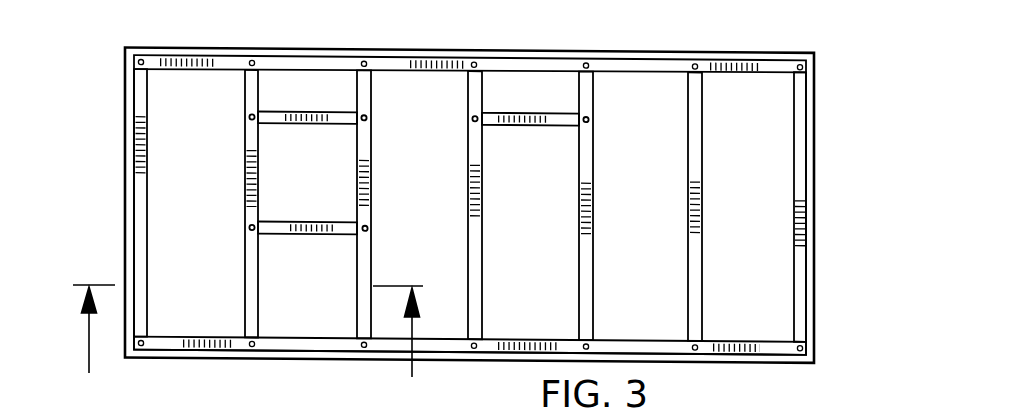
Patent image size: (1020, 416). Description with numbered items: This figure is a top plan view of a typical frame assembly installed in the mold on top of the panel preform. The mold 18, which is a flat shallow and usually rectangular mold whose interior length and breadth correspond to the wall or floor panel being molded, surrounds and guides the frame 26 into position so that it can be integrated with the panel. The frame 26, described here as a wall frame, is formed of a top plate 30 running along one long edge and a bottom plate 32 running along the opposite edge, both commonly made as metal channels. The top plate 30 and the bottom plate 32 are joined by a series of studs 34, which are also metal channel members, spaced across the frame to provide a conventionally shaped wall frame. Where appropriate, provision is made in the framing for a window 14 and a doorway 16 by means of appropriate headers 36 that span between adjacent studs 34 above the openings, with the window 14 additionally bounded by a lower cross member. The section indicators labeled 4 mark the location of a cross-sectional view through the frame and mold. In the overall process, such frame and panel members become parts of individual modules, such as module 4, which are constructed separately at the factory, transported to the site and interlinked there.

The module 4 is at (248, 347).
The window 14 is at (321, 201).
The doorway 16 is at (538, 229).
The mold 18 is at (817, 177).
The frame 26 is at (796, 136).
The top plate 30 is at (552, 42).
The bottom plate 32 is at (712, 363).
The studs 34 is at (150, 212).
The headers 36 is at (310, 121).